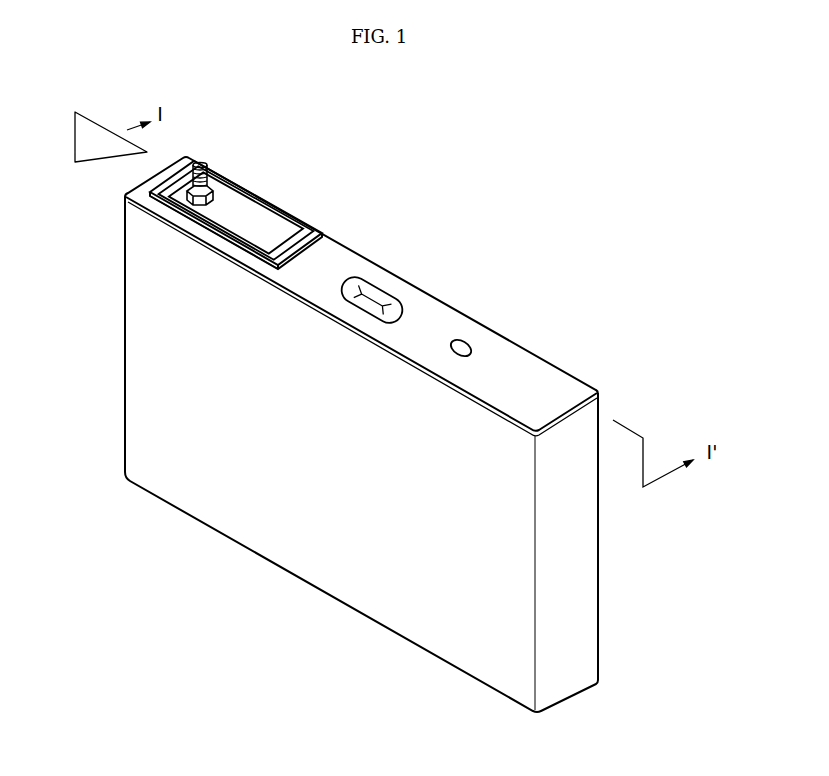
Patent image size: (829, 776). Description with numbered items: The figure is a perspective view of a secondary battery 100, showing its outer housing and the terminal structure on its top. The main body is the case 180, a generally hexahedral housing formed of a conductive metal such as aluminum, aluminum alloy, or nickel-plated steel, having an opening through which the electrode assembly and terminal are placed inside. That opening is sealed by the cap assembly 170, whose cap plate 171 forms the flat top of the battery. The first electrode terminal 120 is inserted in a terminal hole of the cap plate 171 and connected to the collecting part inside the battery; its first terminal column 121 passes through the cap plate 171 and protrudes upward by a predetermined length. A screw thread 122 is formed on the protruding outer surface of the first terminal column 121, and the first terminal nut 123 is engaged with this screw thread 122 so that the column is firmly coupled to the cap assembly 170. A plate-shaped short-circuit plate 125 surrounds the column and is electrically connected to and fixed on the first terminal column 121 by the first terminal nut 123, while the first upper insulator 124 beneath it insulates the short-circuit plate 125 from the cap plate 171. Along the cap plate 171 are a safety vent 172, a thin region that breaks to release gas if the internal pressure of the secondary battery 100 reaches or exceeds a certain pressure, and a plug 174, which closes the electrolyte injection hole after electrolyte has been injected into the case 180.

The secondary battery 100 is at (400, 143).
The first electrode terminal 120 is at (201, 155).
The first terminal column 121 is at (205, 164).
The screw thread 122 is at (217, 182).
The first terminal nut 123 is at (183, 205).
The first upper insulator 124 is at (308, 222).
The short-circuit plate 125 is at (272, 232).
The cap assembly 170 is at (443, 302).
The cap plate 171 is at (347, 268).
The safety vent 172 is at (390, 290).
The plug 174 is at (463, 343).
The case 180 is at (312, 572).